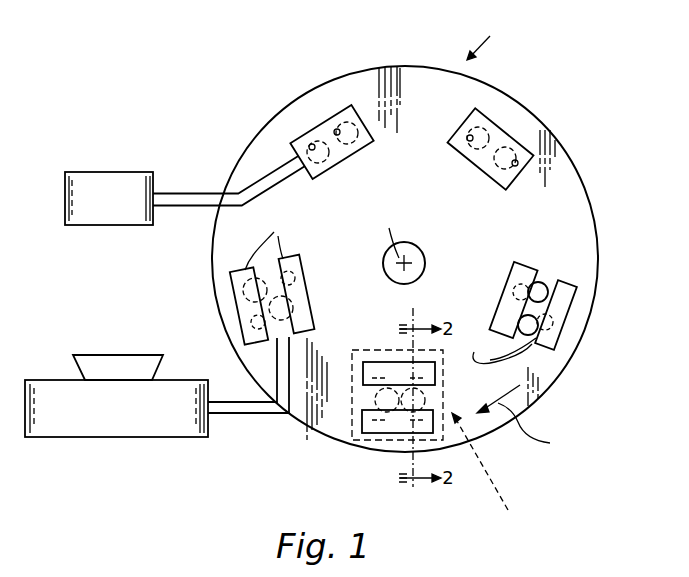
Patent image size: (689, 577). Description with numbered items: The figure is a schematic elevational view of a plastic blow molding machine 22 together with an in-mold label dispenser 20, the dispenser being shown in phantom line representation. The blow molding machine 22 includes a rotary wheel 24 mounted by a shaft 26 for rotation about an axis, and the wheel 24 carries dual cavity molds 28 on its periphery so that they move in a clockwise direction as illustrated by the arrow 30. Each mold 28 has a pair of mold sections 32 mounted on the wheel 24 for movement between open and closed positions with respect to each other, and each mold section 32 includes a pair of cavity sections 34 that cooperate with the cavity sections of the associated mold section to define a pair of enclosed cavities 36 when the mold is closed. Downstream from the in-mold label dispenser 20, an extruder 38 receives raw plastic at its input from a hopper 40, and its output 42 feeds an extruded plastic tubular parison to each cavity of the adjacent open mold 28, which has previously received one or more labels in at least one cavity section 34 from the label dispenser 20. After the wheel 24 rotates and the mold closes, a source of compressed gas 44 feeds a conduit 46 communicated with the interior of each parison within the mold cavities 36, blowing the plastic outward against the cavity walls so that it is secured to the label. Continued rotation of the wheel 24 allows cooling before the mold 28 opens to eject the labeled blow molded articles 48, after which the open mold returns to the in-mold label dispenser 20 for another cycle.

The in-mold label dispenser 20 is at (489, 474).
The plastic blow molding machine 22 is at (489, 38).
The rotary wheel 24 is at (598, 263).
The shaft 26 is at (425, 250).
The dual cavity mold 28 is at (360, 133).
The arrow 30 is at (525, 422).
The mold section 32 is at (326, 118).
The cavity section 34 is at (313, 143).
The enclosed cavity 36 is at (310, 142).
The extruder 38 is at (120, 427).
The hopper 40 is at (83, 368).
The extruder output 42 is at (255, 415).
The source of compressed gas 44 is at (108, 172).
The conduit 46 is at (190, 193).
The labeled blow molded article 48 is at (550, 312).